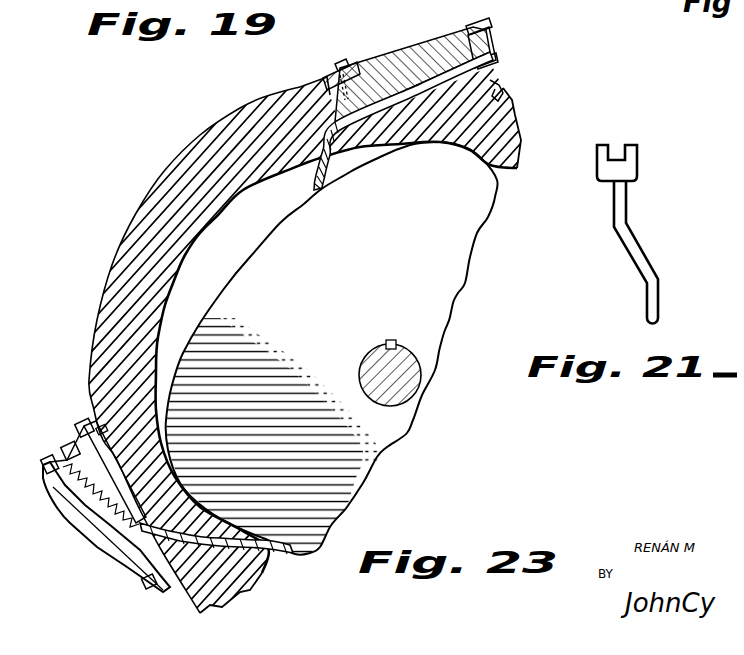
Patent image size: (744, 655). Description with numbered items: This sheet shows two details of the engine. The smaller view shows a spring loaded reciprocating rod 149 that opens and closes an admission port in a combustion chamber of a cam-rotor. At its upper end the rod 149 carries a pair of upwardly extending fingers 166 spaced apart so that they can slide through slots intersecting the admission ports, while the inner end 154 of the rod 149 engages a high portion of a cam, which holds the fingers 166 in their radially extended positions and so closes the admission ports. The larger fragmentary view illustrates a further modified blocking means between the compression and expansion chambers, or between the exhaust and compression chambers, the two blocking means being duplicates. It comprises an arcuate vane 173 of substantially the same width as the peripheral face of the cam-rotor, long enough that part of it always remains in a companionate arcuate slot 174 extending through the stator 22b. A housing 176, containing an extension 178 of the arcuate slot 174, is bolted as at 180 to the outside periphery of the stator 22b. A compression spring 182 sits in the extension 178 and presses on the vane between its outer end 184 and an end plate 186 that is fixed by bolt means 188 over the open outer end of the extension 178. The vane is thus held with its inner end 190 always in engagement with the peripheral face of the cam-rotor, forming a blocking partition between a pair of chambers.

In FIG. 23, the stator 22b is at (246, 106).
In FIG. 23, the housing 176 is at (408, 42).
In FIG. 23, the extension of the arcuate slot 178 is at (403, 85).
In FIG. 23, the outer end of the arcuate vane 184 is at (380, 65).
In FIG. 23, the compression spring 182 is at (459, 30).
In FIG. 23, the bolt means 188 is at (483, 28).
In FIG. 23, the end plate 186 is at (489, 40).
In FIG. 23, the bolts 180 is at (501, 84).
In FIG. 23, the arcuate slot 174 is at (368, 96).
In FIG. 23, the arcuate vane 173 is at (324, 181).
In FIG. 23, the inner end of the arcuate vane 190 is at (306, 194).
In FIG. 21, the fingers 166 is at (630, 145).
In FIG. 21, the reciprocating rod 149 is at (628, 218).
In FIG. 21, the inner end of the rod 154 is at (658, 321).